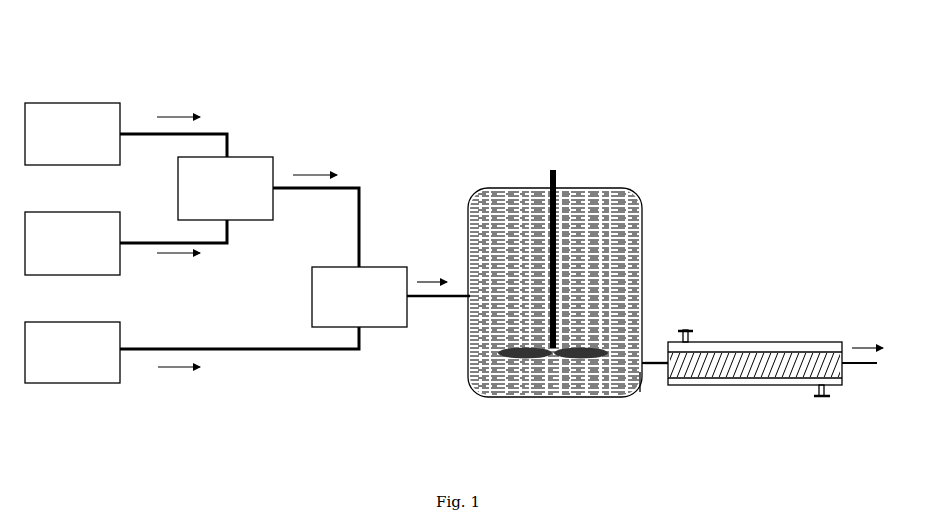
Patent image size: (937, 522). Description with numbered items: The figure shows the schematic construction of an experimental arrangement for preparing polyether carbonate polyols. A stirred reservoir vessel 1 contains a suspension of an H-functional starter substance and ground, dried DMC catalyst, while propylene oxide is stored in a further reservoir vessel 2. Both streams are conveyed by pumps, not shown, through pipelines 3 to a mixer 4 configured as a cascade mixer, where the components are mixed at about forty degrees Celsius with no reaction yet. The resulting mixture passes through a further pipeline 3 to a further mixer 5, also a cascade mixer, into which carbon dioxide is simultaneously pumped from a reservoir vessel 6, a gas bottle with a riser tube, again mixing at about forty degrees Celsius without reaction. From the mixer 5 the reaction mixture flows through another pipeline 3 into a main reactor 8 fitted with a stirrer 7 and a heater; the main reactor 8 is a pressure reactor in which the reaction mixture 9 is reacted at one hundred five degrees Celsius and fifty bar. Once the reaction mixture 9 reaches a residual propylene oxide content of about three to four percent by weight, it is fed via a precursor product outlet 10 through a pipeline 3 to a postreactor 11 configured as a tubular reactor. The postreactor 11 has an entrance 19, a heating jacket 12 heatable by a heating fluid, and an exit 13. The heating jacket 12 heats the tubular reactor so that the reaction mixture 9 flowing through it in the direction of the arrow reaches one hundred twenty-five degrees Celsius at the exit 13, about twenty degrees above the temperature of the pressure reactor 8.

The stirred reservoir vessel 1 is at (72, 134).
The reservoir vessel 2 is at (72, 243).
The pipeline 3 is at (137, 133).
The mixer 4 is at (225, 188).
The further mixer 5 is at (359, 297).
The reservoir vessel 6 is at (72, 352).
The stirrer 7 is at (548, 179).
The main reactor 8 is at (613, 188).
The reaction mixture 9 is at (622, 243).
The precursor product outlet 10 is at (645, 382).
The postreactor 11 is at (755, 322).
The heating jacket 12 is at (713, 342).
The exit 13 is at (843, 367).
The entrance 19 is at (658, 366).